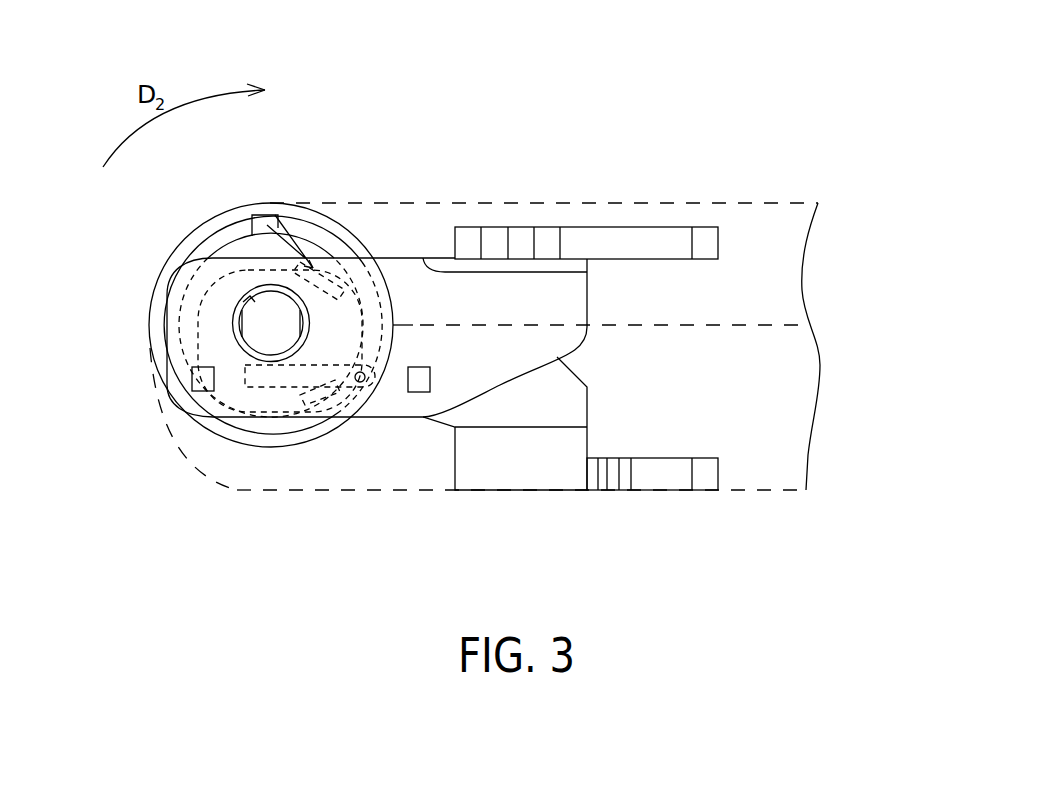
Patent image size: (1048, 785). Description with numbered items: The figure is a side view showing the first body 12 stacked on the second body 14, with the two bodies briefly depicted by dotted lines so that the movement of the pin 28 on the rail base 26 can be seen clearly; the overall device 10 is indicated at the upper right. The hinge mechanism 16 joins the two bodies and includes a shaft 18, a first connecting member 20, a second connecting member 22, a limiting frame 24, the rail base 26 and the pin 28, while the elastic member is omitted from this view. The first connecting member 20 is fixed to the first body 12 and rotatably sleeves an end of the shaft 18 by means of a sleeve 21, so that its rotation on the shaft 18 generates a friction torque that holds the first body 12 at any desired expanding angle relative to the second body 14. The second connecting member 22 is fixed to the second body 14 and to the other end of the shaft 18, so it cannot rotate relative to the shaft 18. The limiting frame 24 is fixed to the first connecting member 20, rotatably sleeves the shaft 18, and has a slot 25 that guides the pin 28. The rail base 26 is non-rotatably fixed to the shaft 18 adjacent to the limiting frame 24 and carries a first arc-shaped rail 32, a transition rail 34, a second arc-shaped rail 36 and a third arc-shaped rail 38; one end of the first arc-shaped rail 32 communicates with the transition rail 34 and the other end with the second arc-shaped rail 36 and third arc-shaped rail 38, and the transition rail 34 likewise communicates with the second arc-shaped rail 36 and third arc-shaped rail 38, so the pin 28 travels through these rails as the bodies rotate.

The hinge assembly 10 is at (898, 88).
The first body 12 is at (675, 203).
The second body 14 is at (753, 490).
The hinge mechanism 16 is at (142, 328).
The shaft 18 is at (260, 314).
The first connecting member 20 is at (467, 237).
The sleeve 21 is at (253, 353).
The second connecting member 22 is at (663, 478).
The limiting frame 24 is at (422, 380).
The slot 25 is at (377, 367).
The rail base 26 is at (330, 222).
The pin 28 is at (362, 383).
The first arc-shaped rail 32 is at (377, 313).
The transition rail 34 is at (277, 245).
The second arc-shaped rail 36 is at (193, 317).
The third arc-shaped rail 38 is at (345, 293).